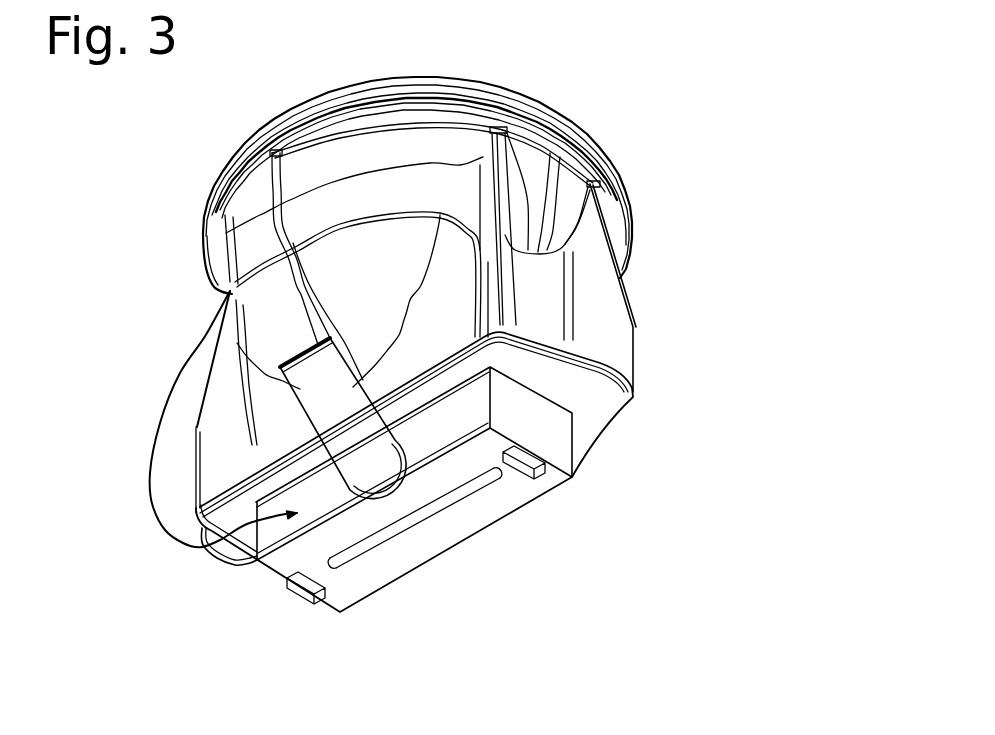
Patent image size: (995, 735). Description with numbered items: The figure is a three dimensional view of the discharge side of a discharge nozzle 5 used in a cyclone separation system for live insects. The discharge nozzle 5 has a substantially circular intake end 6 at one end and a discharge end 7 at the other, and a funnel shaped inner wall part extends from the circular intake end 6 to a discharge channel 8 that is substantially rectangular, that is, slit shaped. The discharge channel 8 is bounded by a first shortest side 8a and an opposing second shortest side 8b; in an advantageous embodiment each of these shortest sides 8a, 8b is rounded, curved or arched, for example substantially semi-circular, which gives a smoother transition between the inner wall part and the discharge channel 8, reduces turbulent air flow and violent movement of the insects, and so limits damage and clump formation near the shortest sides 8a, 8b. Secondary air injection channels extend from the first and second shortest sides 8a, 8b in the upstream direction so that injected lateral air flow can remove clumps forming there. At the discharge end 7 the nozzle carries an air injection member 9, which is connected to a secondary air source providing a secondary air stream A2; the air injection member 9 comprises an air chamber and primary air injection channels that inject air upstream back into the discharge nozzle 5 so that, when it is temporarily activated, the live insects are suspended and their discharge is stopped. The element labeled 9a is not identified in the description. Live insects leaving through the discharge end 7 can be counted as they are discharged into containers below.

The discharge nozzle 5 is at (397, 343).
The intake end 6 is at (607, 158).
The discharge end 7 is at (457, 504).
The discharge channel 8 is at (443, 554).
The first shortest side 8a is at (497, 470).
The second shortest side 8b is at (343, 567).
The air injection member 9 is at (252, 445).
The arm hinge portion 9a is at (307, 387).
The secondary air stream A2 is at (290, 345).